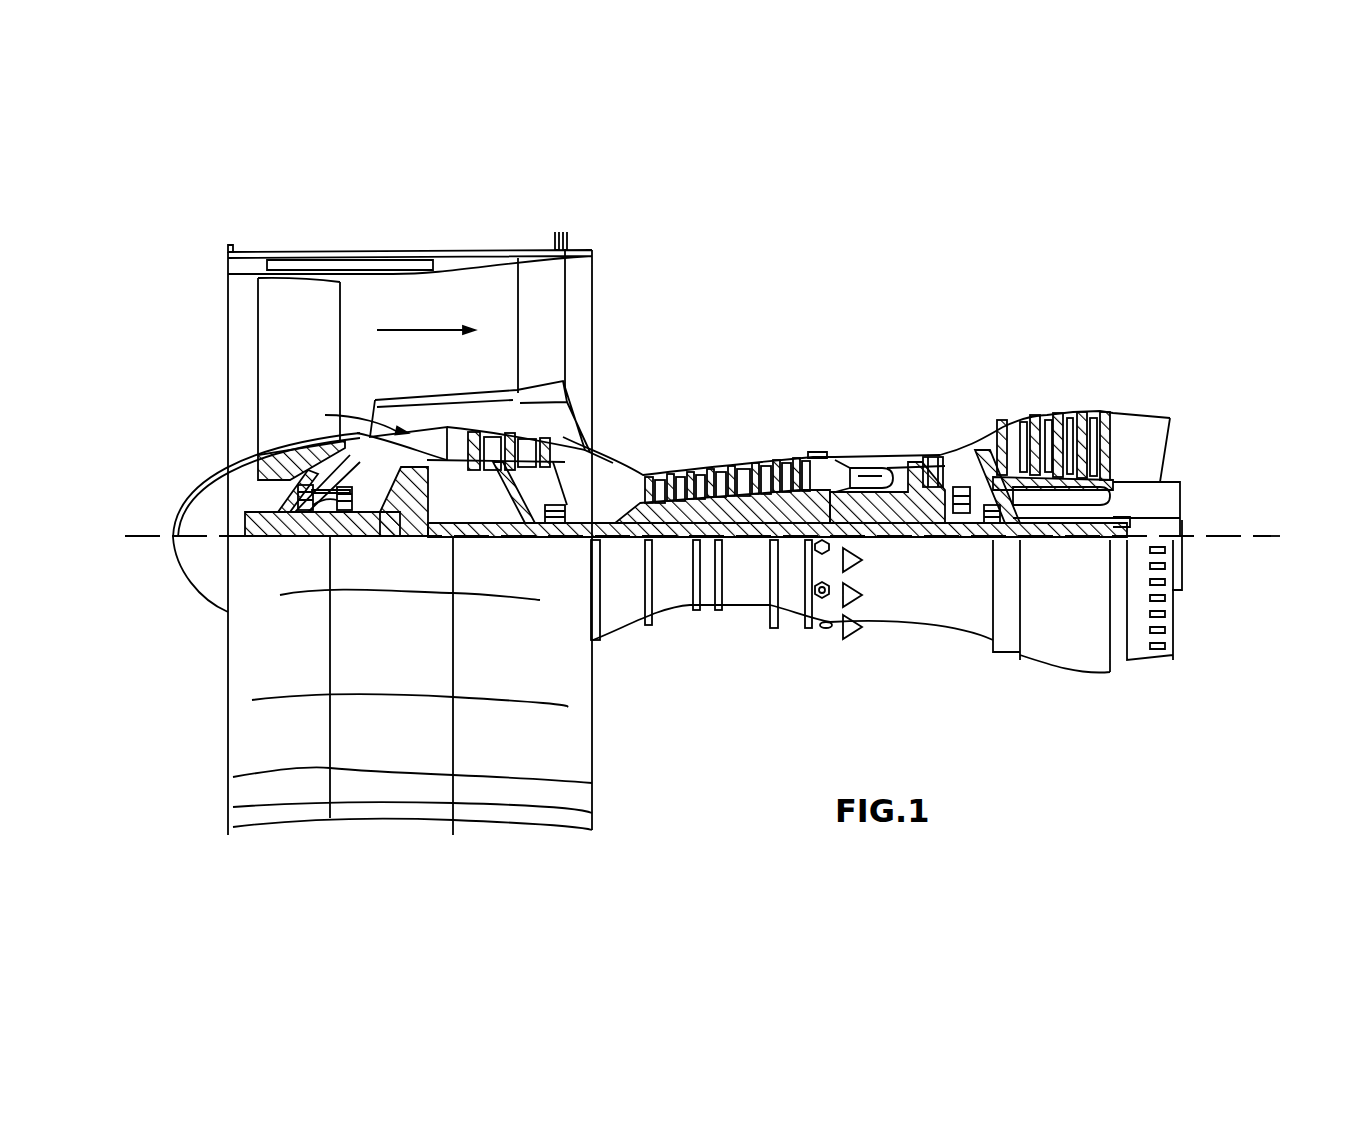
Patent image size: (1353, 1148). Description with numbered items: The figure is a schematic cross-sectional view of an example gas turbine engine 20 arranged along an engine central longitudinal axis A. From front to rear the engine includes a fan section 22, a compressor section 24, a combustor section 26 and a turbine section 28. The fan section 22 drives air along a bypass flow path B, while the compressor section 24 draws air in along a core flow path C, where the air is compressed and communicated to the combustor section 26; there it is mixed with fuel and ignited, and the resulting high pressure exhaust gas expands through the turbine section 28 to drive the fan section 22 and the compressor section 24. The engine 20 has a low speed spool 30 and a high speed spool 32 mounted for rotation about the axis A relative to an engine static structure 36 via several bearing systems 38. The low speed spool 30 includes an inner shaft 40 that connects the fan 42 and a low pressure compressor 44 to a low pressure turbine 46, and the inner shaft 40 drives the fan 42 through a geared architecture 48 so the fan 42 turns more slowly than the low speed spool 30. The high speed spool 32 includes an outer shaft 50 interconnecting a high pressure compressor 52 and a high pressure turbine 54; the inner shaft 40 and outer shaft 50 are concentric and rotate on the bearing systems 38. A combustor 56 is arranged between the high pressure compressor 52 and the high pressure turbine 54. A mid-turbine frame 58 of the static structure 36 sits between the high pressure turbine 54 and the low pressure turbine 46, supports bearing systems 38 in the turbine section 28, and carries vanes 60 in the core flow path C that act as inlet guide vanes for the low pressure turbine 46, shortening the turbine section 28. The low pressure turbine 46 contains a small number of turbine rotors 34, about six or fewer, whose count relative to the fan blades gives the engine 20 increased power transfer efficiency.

The gas turbine engine 20 is at (875, 300).
The fan section 22 is at (220, 228).
The compressor section 24 is at (853, 364).
The combustor section 26 is at (858, 364).
The turbine section 28 is at (960, 364).
The low speed spool 30 is at (750, 552).
The high speed spool 32 is at (793, 492).
The turbine rotors 34 is at (1075, 537).
The engine static structure 36 is at (790, 637).
The bearing systems 38 is at (332, 520).
The inner shaft 40 is at (610, 540).
The fan 42 is at (313, 377).
The low pressure compressor section 44 is at (527, 437).
The low pressure turbine section 46 is at (1057, 414).
The geared architecture 48 is at (418, 515).
The outer shaft 50 is at (878, 530).
The high pressure compressor section 52 is at (718, 497).
The high pressure turbine section 54 is at (930, 462).
The combustor 56 is at (865, 480).
The mid-turbine frame 58 is at (979, 436).
The vanes 60 is at (1005, 537).
The engine central longitudinal axis A is at (1250, 536).
The bypass flow path B is at (408, 330).
The core flow path C is at (356, 419).